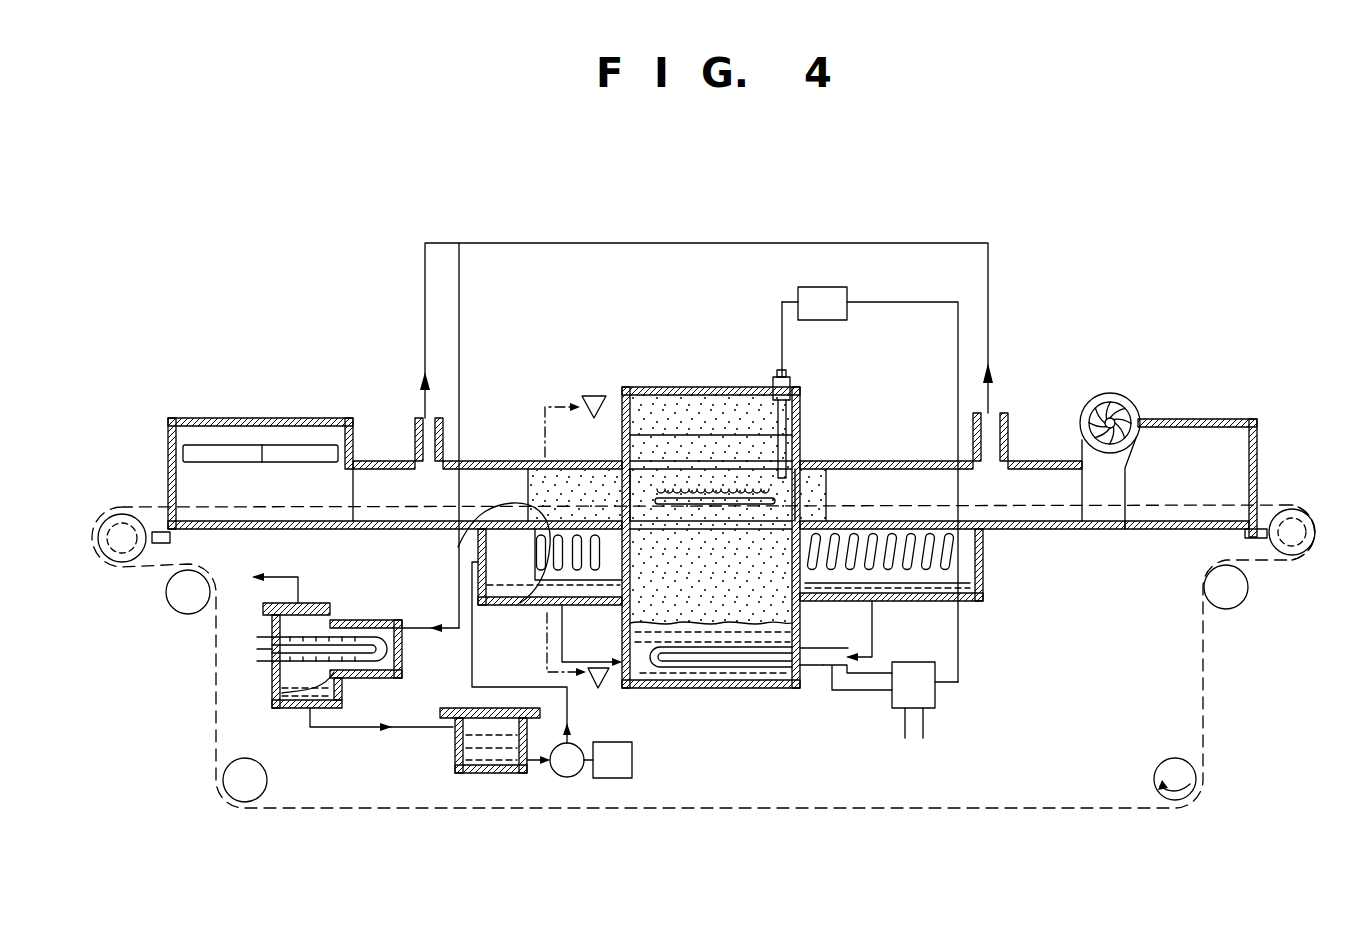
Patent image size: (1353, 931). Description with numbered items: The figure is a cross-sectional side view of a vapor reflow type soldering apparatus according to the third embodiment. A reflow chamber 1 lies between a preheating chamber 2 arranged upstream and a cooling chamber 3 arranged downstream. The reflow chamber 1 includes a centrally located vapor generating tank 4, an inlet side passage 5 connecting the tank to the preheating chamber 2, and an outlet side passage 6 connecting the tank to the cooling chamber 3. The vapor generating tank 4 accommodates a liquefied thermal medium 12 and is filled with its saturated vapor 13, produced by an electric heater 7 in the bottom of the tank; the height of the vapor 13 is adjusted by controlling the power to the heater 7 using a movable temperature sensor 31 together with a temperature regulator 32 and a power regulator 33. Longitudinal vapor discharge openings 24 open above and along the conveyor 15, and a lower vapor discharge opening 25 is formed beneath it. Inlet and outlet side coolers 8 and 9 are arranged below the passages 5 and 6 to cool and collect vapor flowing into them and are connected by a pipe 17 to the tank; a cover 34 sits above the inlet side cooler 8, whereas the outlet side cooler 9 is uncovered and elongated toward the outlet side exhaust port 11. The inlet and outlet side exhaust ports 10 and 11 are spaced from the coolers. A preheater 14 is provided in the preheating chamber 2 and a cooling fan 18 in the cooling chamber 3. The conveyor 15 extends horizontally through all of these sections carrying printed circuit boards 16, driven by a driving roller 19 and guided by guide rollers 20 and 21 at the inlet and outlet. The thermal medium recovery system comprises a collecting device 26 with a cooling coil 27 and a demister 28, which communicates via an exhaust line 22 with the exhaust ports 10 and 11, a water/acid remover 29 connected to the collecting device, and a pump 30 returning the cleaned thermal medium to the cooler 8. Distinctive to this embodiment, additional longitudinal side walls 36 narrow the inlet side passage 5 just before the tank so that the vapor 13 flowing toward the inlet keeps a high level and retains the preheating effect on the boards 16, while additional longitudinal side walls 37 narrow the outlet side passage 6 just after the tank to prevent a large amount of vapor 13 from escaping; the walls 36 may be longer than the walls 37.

The reflow chamber 1 is at (650, 387).
The preheating chamber 2 is at (200, 418).
The cooling chamber 3 is at (1150, 529).
The vapor generating tank 4 is at (597, 337).
The inlet side passage 5 is at (483, 461).
The outlet side passage 6 is at (905, 461).
The electric heater 7 is at (812, 670).
The inlet side cooler 8 is at (520, 597).
The outlet side cooler 9 is at (943, 549).
The inlet side exhaust port 10 is at (415, 440).
The outlet side exhaust port 11 is at (1008, 433).
The liquefied thermal medium 12 is at (681, 688).
The saturated vapor 13 is at (638, 478).
The preheater 14 is at (296, 445).
The conveyor 15 is at (1293, 505).
The printed circuit boards 16 is at (697, 488).
The pipe 17 is at (872, 625).
The cooling fan 18 is at (1118, 395).
The driving roller 19 is at (1158, 765).
The guide roller 20 is at (122, 514).
The guide roller 21 is at (1283, 556).
The exhaust duct 22 is at (459, 282).
The longitudinal vapor discharge openings 24 is at (745, 455).
The lower vapor discharge opening 25 is at (690, 520).
The collecting device 26 is at (403, 665).
The cooling coil 27 is at (376, 620).
The demister 28 is at (313, 603).
The water/acid remover 29 is at (455, 763).
The pump 30 is at (567, 778).
The sensor 31 is at (790, 418).
The temperature regulator 32 is at (835, 287).
The power regulator 33 is at (935, 700).
The cover 34 is at (458, 547).
The additional longitudinal side walls 36 is at (545, 485).
The additional longitudinal side walls 37 is at (820, 490).